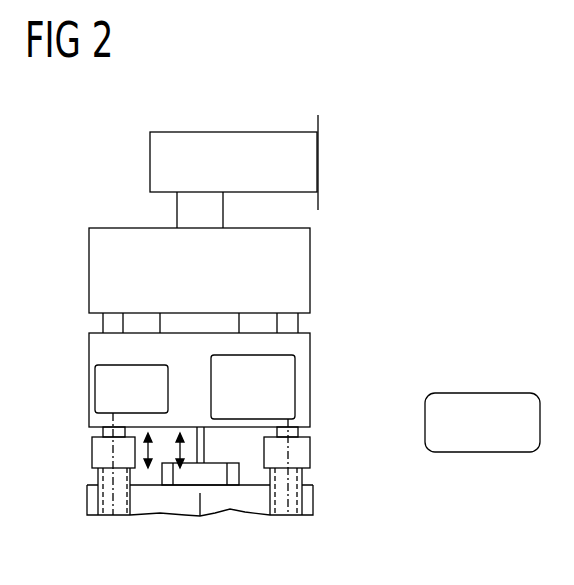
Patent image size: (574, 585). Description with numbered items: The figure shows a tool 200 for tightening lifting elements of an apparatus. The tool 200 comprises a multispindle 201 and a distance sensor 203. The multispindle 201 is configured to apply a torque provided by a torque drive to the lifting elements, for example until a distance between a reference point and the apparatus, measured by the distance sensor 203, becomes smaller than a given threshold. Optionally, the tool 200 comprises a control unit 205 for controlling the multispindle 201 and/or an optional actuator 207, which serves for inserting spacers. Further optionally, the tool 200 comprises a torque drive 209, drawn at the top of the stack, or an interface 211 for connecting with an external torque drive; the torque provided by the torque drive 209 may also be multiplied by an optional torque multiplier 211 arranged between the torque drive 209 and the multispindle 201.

The tool 200 is at (442, 123).
The multispindle 201 is at (96, 352).
The distance sensor 203 is at (288, 388).
The control unit 205 is at (107, 388).
The actuator 207 is at (481, 392).
The torque drive 209 is at (234, 138).
The interface 211 is at (96, 270).